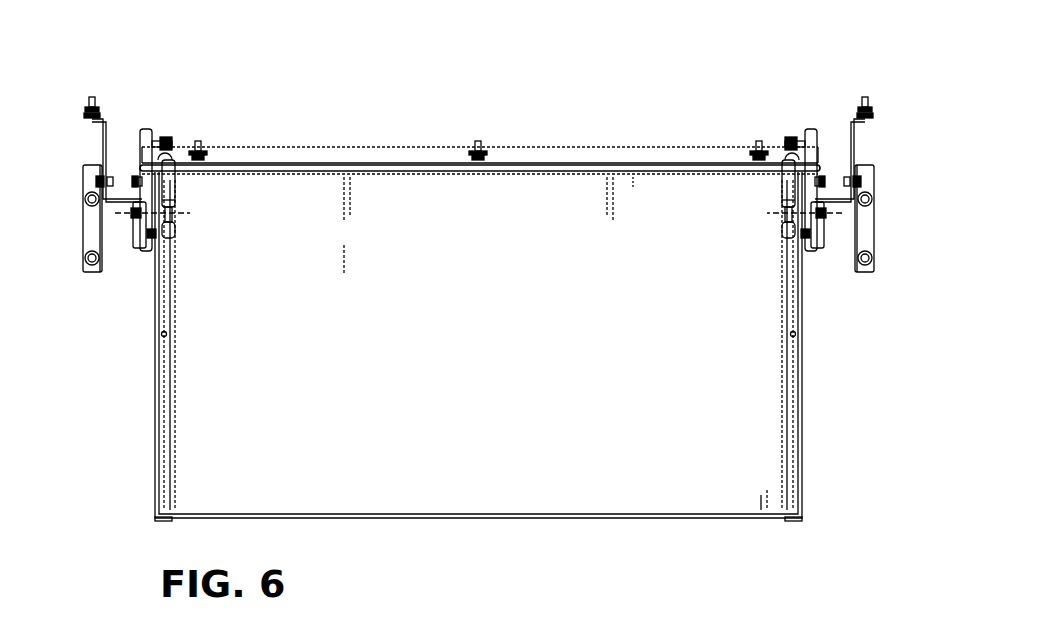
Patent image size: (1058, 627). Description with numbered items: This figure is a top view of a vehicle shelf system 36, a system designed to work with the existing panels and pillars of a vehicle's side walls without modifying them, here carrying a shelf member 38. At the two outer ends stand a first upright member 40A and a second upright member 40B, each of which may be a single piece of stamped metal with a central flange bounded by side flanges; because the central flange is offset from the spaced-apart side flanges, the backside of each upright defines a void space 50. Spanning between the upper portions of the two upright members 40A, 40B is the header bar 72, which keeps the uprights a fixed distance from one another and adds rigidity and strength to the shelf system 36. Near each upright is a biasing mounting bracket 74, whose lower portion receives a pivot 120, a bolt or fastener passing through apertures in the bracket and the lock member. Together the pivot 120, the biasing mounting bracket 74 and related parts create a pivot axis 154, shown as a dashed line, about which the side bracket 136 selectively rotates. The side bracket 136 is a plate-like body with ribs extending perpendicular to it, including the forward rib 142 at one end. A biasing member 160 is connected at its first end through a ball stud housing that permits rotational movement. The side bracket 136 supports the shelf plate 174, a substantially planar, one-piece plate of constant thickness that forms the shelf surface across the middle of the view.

The vehicle shelf system 36 is at (348, 115).
The shelf member 38 is at (556, 140).
The first upright member 40A is at (113, 203).
The second upright member 40B is at (845, 201).
The void space 50 is at (121, 106).
The header bar 72 is at (414, 163).
The biasing mounting bracket 74 is at (148, 131).
The pivot 120 is at (130, 219).
The side bracket 136 is at (154, 453).
The forward rib 142 is at (161, 522).
The pivot axis 154 is at (179, 218).
The biasing member 160 is at (176, 186).
The shelf plate 174 is at (461, 355).